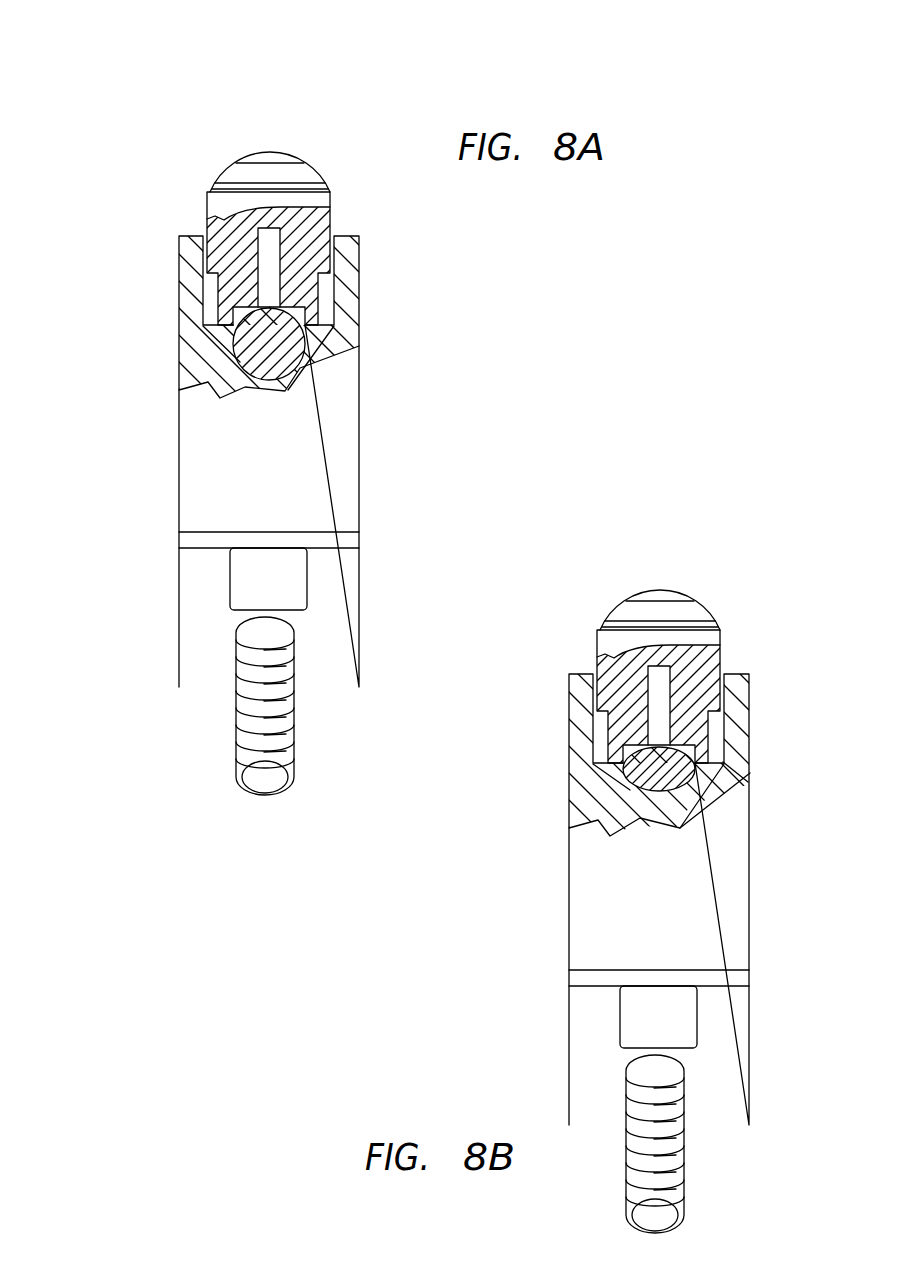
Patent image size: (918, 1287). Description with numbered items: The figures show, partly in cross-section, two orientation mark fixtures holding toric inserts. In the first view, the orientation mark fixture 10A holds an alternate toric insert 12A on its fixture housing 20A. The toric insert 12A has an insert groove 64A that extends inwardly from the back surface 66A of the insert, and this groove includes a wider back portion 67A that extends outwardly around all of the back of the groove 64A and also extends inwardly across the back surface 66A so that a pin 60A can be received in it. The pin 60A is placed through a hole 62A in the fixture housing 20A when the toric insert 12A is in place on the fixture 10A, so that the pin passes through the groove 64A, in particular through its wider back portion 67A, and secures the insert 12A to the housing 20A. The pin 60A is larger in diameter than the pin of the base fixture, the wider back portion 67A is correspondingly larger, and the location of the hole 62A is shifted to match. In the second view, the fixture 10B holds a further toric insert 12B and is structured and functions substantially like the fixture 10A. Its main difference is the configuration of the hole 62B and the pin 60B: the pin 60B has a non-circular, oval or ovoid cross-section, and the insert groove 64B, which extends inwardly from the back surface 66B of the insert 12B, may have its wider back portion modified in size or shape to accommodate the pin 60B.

In FIG. 8A, the orientation mark fixture 10A is at (153, 457).
In FIG. 8A, the toric insert 12A is at (237, 157).
In FIG. 8A, the fixture housing 20A is at (378, 500).
In FIG. 8A, the pin 60A is at (252, 343).
In FIG. 8A, the hole 62A is at (241, 370).
In FIG. 8A, the insert groove 64A is at (270, 237).
In FIG. 8A, the back surface 66A is at (310, 318).
In FIG. 8A, the wider back portion 67A is at (233, 310).
In FIG. 8B, the orientation mark fixture 10B is at (654, 953).
In FIG. 8B, the toric insert 12B is at (657, 633).
In FIG. 8B, the pin 60B is at (610, 768).
In FIG. 8B, the hole 62B is at (697, 810).
In FIG. 8B, the insert groove 64B is at (728, 644).
In FIG. 8B, the back surface 66B is at (749, 726).